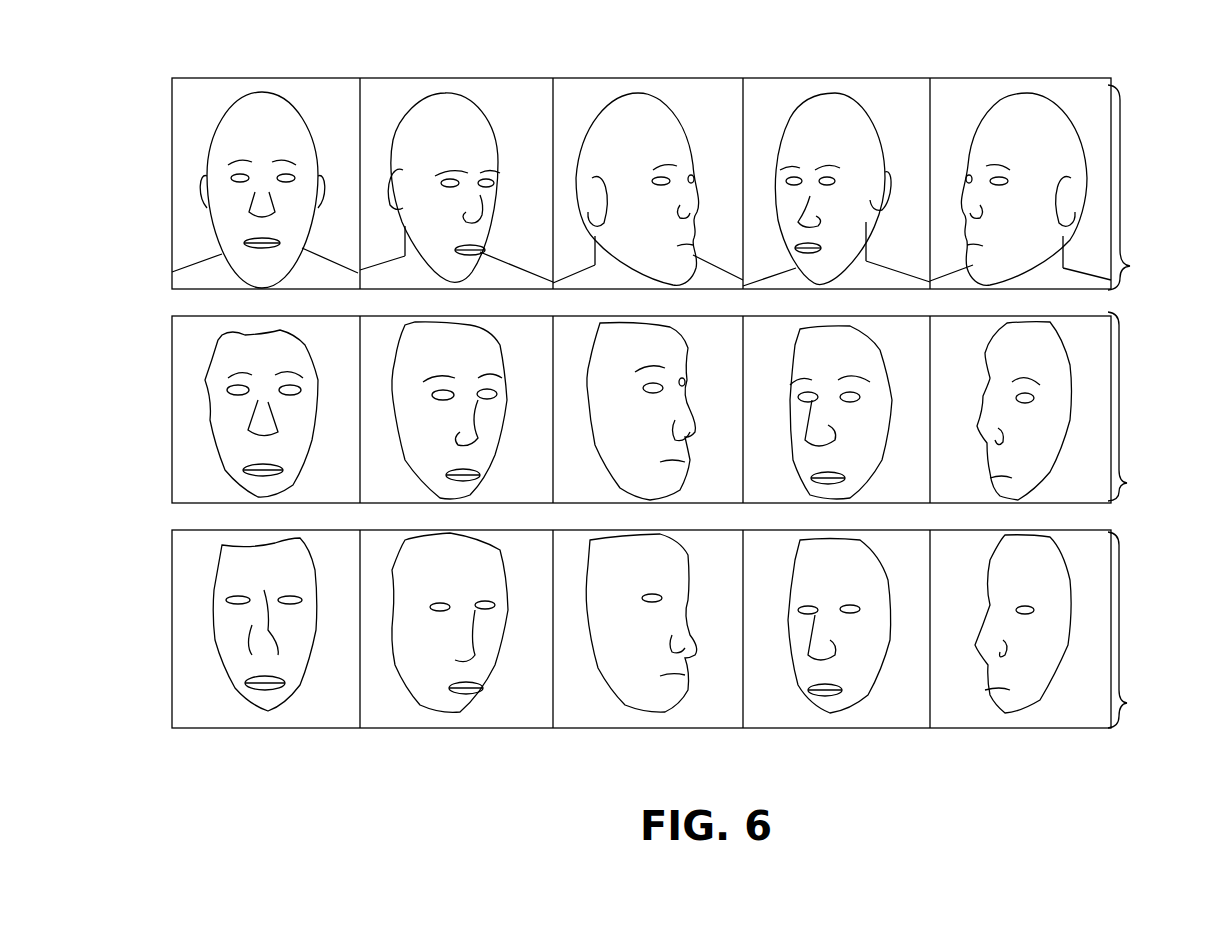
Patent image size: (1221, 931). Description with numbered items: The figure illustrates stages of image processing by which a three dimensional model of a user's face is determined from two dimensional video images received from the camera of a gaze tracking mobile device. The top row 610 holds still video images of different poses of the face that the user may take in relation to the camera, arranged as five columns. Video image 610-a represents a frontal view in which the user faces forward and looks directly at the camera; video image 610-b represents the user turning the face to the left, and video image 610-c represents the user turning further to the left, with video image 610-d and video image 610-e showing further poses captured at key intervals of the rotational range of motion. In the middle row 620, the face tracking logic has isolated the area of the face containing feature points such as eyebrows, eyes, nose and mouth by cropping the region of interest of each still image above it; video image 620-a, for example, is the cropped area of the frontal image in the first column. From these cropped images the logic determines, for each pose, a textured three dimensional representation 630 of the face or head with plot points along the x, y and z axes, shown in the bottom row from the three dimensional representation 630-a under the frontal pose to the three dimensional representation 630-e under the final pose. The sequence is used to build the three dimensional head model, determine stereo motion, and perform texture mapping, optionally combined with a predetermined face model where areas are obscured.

The top row 610 is at (1130, 184).
The video image 610-a is at (283, 80).
The video image 610-b is at (480, 80).
The video image 610-c is at (628, 80).
The video image 610-d is at (815, 80).
The video image 610-e is at (1000, 80).
The middle row 620 is at (1127, 402).
The video image 620-a is at (175, 415).
The 3D representation 630 is at (1127, 627).
The 3D representation 630-a is at (250, 730).
The 3D representation 630-e is at (1005, 730).